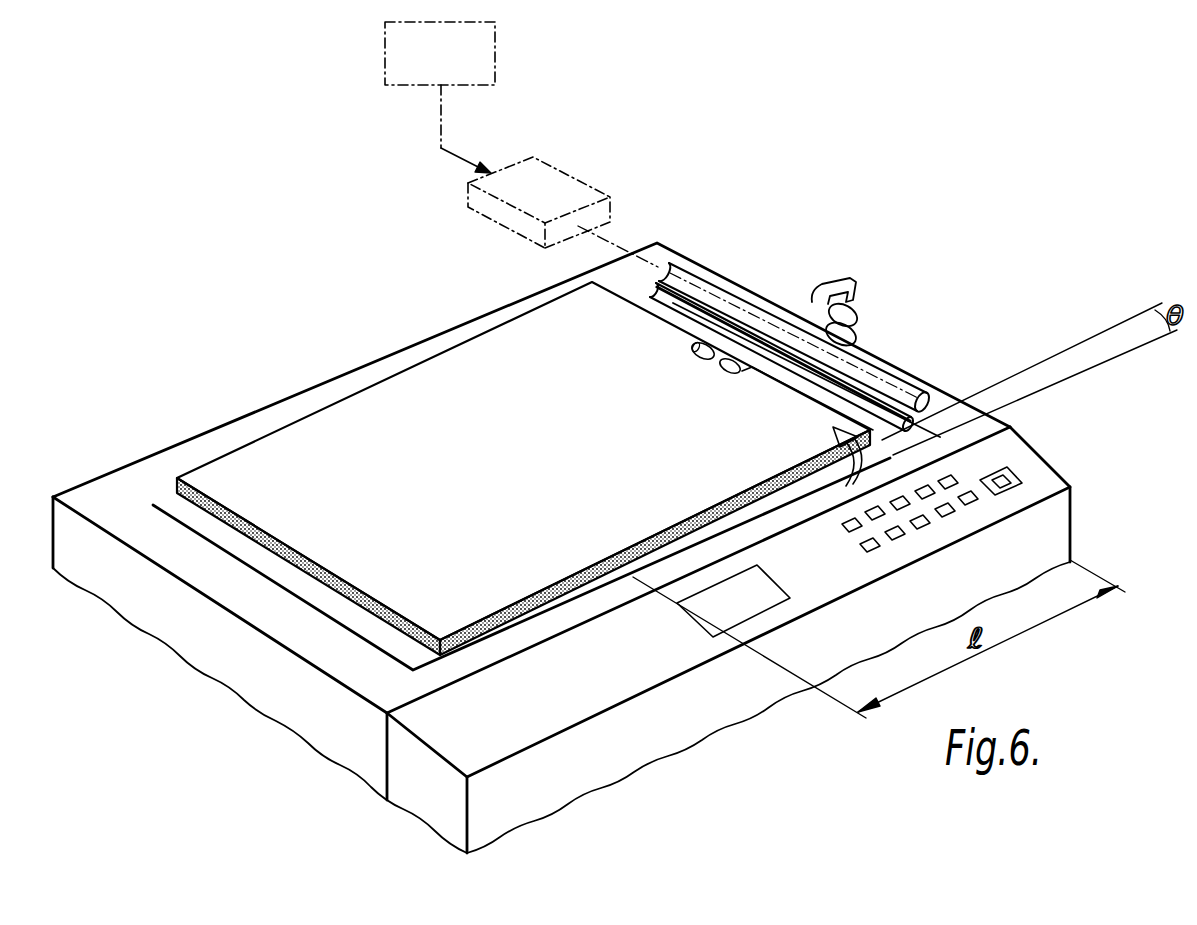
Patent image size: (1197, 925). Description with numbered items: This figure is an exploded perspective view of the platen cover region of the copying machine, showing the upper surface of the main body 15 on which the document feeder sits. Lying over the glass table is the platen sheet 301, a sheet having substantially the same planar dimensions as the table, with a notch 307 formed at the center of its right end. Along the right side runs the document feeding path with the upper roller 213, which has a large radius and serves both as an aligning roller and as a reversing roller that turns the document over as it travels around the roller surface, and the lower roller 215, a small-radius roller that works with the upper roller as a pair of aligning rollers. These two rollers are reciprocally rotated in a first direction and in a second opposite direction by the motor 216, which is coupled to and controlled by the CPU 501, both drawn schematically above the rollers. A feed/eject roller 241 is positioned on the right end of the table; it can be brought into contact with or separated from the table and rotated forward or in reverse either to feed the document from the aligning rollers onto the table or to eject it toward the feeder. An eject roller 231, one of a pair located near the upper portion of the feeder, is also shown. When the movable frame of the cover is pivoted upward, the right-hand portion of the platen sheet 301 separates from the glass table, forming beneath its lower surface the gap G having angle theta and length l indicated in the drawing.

The main body 15 is at (1078, 522).
The platen sheet 301 is at (358, 420).
The CPU 501 is at (482, 67).
The motor 216 is at (570, 182).
The upper roller 213 is at (707, 287).
The lower roller 215 is at (670, 304).
The notch 307 is at (693, 347).
The feed/eject roller 241 is at (720, 368).
The eject roller 231 is at (852, 318).